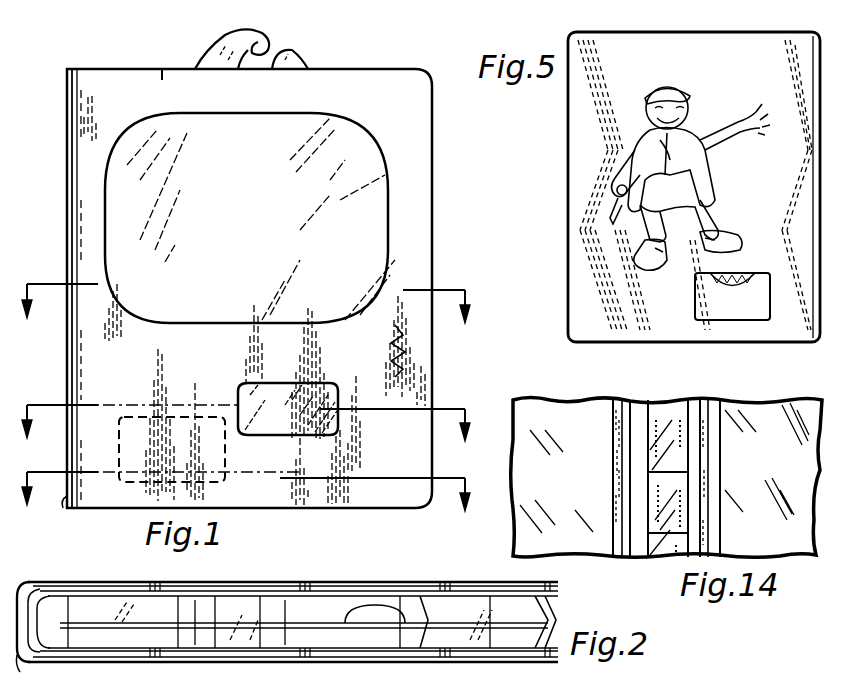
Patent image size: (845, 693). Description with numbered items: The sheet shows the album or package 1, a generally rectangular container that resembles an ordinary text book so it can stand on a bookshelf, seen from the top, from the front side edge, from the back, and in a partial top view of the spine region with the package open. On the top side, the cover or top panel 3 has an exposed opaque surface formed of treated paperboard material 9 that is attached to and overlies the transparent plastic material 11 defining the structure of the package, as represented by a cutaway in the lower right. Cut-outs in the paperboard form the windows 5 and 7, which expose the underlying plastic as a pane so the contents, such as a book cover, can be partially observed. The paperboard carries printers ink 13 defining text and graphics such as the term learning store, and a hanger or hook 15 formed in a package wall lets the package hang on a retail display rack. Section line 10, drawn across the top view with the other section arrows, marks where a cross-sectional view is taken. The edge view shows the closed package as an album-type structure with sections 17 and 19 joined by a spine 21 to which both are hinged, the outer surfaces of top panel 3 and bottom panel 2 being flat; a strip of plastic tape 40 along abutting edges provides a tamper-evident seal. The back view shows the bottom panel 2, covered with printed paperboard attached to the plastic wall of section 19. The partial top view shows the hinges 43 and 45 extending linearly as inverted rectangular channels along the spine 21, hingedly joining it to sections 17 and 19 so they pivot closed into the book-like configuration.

In FIG. 1, the album or package 1 is at (55, 182).
In FIG. 5, the bottom panel 2 is at (583, 160).
In FIG. 2, the bottom panel 2 is at (328, 662).
In FIG. 2, the top panel 3 is at (342, 583).
In FIG. 1, the window 5 is at (222, 298).
In FIG. 1, the window 7 is at (306, 396).
In FIG. 1, the treated paperboard material 9 is at (436, 318).
In FIG. 1, the section line 10 is at (246, 438).
In FIG. 1, the transparent plastic material 11 is at (438, 365).
In FIG. 14, the transparent plastic material 11 is at (562, 466).
In FIG. 1, the printers ink 13 is at (163, 70).
In FIG. 14, the printers ink 13 is at (690, 425).
In FIG. 1, the hanger or hook 15 is at (225, 42).
In FIG. 14, the section 17 is at (736, 398).
In FIG. 14, the section 19 is at (585, 396).
In FIG. 1, the spine 21 is at (62, 514).
In FIG. 14, the spine 21 is at (655, 410).
In FIG. 2, the spine 21 is at (30, 672).
In FIG. 2, the strip of plastic tape 40 is at (445, 577).
In FIG. 14, the hinge 43 is at (720, 494).
In FIG. 14, the hinge 45 is at (615, 494).